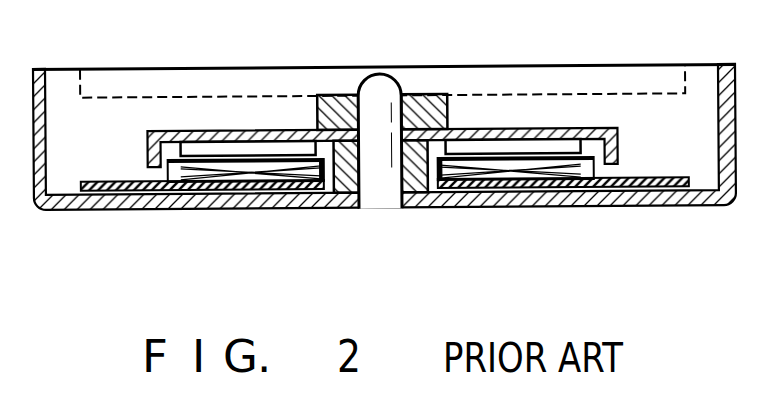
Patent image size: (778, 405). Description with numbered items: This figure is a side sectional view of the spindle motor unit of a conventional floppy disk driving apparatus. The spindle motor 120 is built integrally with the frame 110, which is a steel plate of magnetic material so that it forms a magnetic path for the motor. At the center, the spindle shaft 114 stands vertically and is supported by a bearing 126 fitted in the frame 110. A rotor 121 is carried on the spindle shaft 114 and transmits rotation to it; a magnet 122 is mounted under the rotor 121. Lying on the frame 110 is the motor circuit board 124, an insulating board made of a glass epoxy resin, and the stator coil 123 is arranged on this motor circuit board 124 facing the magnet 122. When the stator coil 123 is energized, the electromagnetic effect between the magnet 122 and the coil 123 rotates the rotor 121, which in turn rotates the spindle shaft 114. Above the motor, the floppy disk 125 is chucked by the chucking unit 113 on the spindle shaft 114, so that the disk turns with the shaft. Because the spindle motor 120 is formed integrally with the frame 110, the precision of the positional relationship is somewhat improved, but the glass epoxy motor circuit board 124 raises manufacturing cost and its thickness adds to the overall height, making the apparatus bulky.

The frame 110 is at (248, 196).
The chucking unit 113 is at (434, 111).
The spindle shaft 114 is at (382, 190).
The spindle motor 120 is at (145, 170).
The rotor 121 is at (190, 132).
The magnet 122 is at (583, 154).
The stator coil 123 is at (505, 178).
The motor circuit board 124 is at (146, 192).
The floppy disk 125 is at (334, 68).
The bearing 126 is at (352, 197).